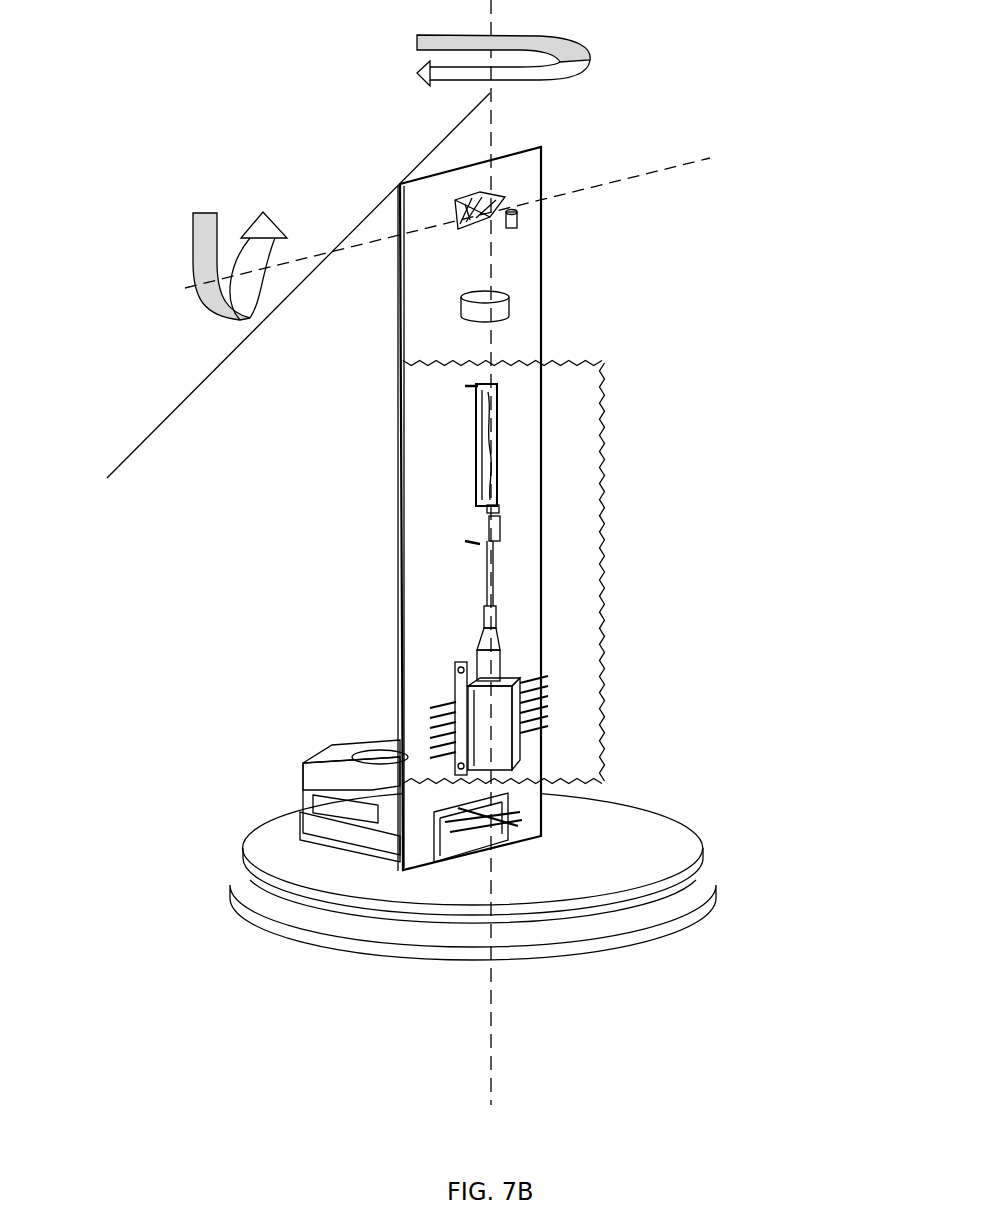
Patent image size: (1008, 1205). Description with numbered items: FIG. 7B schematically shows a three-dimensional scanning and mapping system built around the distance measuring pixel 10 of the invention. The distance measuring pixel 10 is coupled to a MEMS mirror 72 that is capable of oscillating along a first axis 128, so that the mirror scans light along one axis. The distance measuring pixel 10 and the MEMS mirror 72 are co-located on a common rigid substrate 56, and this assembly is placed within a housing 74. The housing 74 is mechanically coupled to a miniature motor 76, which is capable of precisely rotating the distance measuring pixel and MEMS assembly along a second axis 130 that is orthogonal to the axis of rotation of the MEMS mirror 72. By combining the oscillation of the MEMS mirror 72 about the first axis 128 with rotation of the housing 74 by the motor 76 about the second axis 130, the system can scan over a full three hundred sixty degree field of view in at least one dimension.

The distance measuring pixel 10 is at (584, 680).
The common rigid substrate 56 is at (427, 273).
The MEMS mirror 72 is at (492, 220).
The housing 74 is at (645, 843).
The miniature motor 76 is at (344, 765).
The first axis 128 is at (695, 165).
The second axis 130 is at (266, 318).